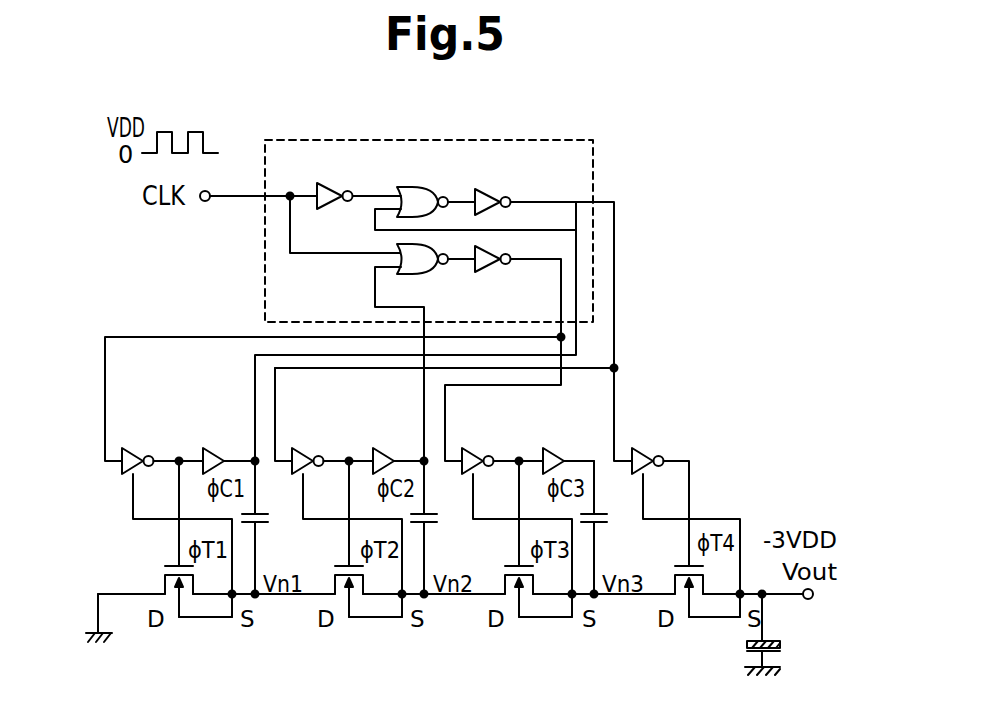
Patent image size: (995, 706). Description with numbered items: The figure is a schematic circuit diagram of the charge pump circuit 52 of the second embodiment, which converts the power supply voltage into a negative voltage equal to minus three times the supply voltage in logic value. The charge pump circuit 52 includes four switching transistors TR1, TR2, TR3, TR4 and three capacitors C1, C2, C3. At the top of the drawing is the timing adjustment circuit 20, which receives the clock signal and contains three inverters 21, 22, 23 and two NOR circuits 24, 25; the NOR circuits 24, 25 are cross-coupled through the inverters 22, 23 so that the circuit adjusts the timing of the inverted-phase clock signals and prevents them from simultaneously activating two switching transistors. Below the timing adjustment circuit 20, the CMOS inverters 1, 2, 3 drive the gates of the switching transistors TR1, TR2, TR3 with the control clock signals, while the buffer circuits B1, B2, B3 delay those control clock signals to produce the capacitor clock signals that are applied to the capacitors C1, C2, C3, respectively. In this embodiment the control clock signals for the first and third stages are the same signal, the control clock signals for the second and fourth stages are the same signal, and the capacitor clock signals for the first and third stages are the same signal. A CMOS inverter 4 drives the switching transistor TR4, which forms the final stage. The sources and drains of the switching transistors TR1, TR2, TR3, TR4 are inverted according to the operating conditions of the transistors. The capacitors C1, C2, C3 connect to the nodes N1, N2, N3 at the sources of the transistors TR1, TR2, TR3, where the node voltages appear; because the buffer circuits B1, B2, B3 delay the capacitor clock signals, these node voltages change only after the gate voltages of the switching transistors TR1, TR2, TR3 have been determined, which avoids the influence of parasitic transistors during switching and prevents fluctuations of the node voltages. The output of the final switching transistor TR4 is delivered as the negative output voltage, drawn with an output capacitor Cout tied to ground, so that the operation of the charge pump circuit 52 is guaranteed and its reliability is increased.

The timing adjustment circuit 20 is at (595, 150).
The inverter 21 is at (332, 183).
The inverter 22 is at (490, 189).
The inverter 23 is at (490, 273).
The NOR circuit 24 is at (412, 187).
The NOR circuit 25 is at (415, 274).
The charge pump circuit 52 is at (704, 147).
The CMOS inverter 1 is at (135, 446).
The CMOS inverter 2 is at (305, 446).
The CMOS inverter 3 is at (475, 446).
The CMOS inverter 4 is at (645, 446).
The buffer circuit B1 is at (214, 446).
The buffer circuit B2 is at (384, 446).
The buffer circuit B3 is at (554, 446).
The capacitor C1 is at (258, 512).
The capacitor C2 is at (427, 512).
The capacitor C3 is at (597, 512).
The switching transistor TR1 is at (165, 566).
The switching transistor TR2 is at (335, 566).
The switching transistor TR3 is at (505, 566).
The switching transistor TR4 is at (675, 566).
The node N1 is at (255, 598).
The node N2 is at (425, 598).
The node N3 is at (595, 598).
The output capacitor Cout is at (770, 640).